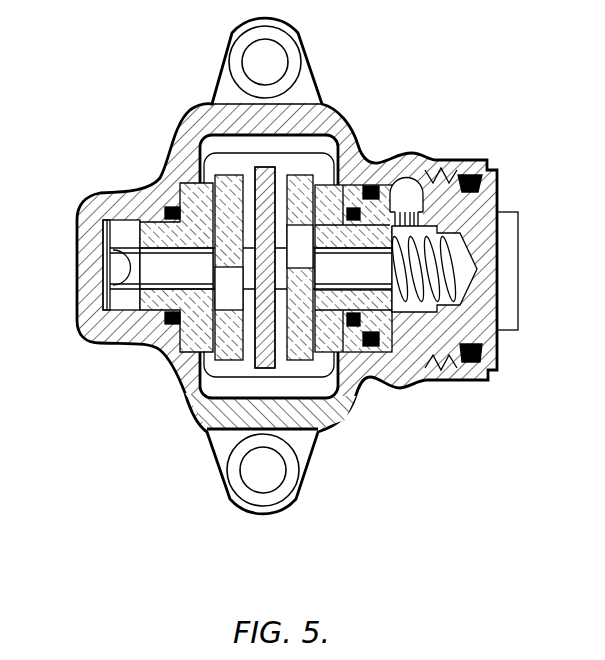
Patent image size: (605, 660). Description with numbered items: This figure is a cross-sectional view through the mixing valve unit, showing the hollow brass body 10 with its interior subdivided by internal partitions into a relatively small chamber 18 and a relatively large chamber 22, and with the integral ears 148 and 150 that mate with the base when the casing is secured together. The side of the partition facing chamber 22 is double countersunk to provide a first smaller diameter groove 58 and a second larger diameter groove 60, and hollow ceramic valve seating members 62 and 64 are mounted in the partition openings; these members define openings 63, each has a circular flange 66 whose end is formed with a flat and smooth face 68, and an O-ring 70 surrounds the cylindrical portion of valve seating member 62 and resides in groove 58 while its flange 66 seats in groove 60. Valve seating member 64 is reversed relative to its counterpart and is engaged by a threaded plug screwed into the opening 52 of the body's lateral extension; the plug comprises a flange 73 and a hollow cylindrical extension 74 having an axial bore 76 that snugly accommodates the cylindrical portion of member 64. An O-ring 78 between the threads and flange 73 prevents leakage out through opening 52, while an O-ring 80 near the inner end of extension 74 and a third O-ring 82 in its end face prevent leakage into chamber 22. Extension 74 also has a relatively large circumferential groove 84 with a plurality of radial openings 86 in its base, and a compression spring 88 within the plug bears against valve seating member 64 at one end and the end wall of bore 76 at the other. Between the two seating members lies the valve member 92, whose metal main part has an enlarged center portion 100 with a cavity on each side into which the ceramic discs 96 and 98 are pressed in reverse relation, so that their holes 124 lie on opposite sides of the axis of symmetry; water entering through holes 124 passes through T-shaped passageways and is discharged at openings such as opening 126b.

The body 10 is at (156, 146).
The chamber 18 is at (102, 226).
The chamber 22 is at (316, 148).
The opening 52 is at (466, 386).
The groove 58 is at (180, 310).
The groove 60 is at (165, 335).
The valve seating member 62 is at (135, 294).
The openings 63 is at (150, 267).
The valve seating member 64 is at (336, 200).
The circular flange 66 is at (226, 190).
The faces 68 is at (202, 140).
The O-ring 70 is at (155, 187).
The flange 73 is at (499, 176).
The cylindrical extension 74 is at (388, 200).
The cylindrical axial bore 76 is at (465, 272).
The O-ring 78 is at (473, 176).
The O-ring 80 is at (380, 398).
The O-ring 82 is at (356, 205).
The circumferential groove 84 is at (430, 382).
The radial openings 86 is at (407, 213).
The compression spring 88 is at (443, 287).
The valve member 92 is at (245, 155).
The part 96 is at (228, 365).
The part 98 is at (302, 372).
The enlarged center portion 100 is at (271, 381).
The holes 124 is at (185, 365).
The opening 126b is at (213, 263).
The ear 148 is at (297, 500).
The ear 150 is at (306, 42).